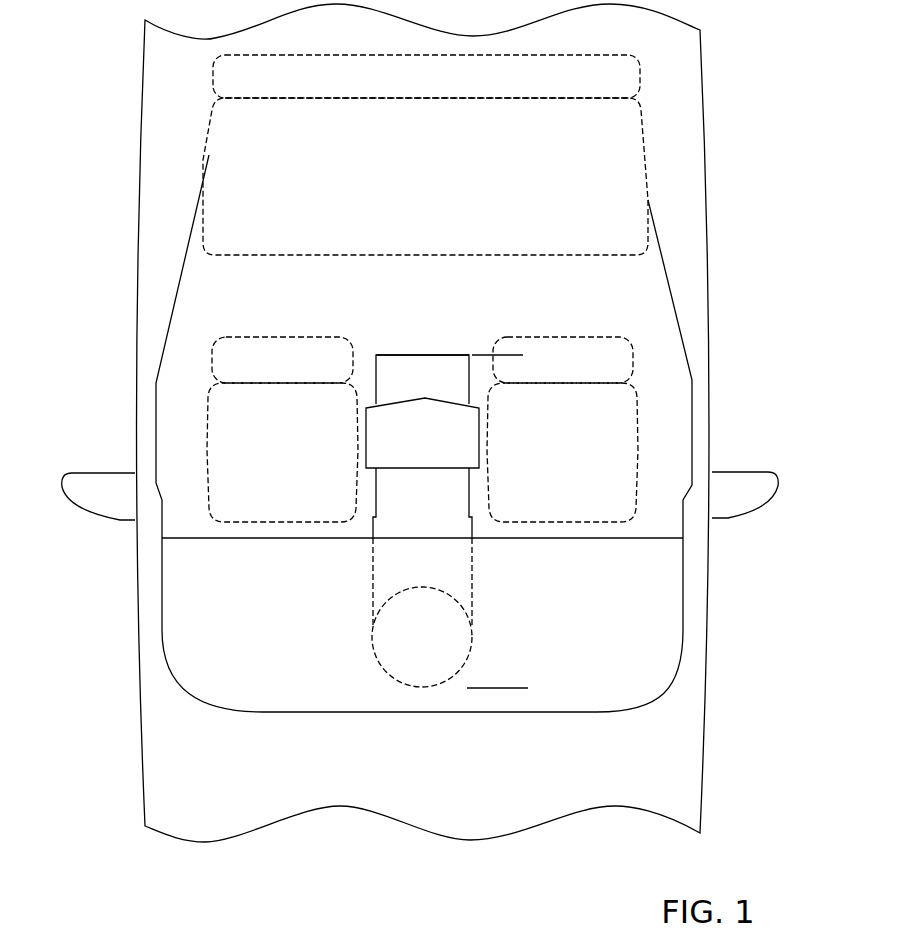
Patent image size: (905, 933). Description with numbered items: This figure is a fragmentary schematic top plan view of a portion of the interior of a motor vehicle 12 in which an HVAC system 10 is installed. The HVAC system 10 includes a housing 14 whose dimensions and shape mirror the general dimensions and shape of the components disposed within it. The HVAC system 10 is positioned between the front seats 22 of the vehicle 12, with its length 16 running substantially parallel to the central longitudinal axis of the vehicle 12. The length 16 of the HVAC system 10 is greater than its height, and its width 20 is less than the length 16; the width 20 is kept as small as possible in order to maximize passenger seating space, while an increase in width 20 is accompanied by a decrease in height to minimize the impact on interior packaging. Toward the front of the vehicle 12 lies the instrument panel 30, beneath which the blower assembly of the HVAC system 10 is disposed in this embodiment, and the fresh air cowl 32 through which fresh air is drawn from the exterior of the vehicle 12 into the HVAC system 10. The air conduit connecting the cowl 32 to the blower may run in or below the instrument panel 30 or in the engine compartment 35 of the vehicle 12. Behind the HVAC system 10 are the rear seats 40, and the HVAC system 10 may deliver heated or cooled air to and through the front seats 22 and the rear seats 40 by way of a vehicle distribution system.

The HVAC system 10 is at (403, 360).
The motor vehicle 12 is at (141, 827).
The housing 14 is at (414, 523).
The length 16 is at (508, 370).
The width 20 is at (471, 438).
The front seats 22 is at (269, 455).
The instrument panel 30 is at (276, 628).
The fresh air cowl 32 is at (422, 716).
The engine compartment 35 is at (235, 765).
The rear seats 40 is at (426, 170).